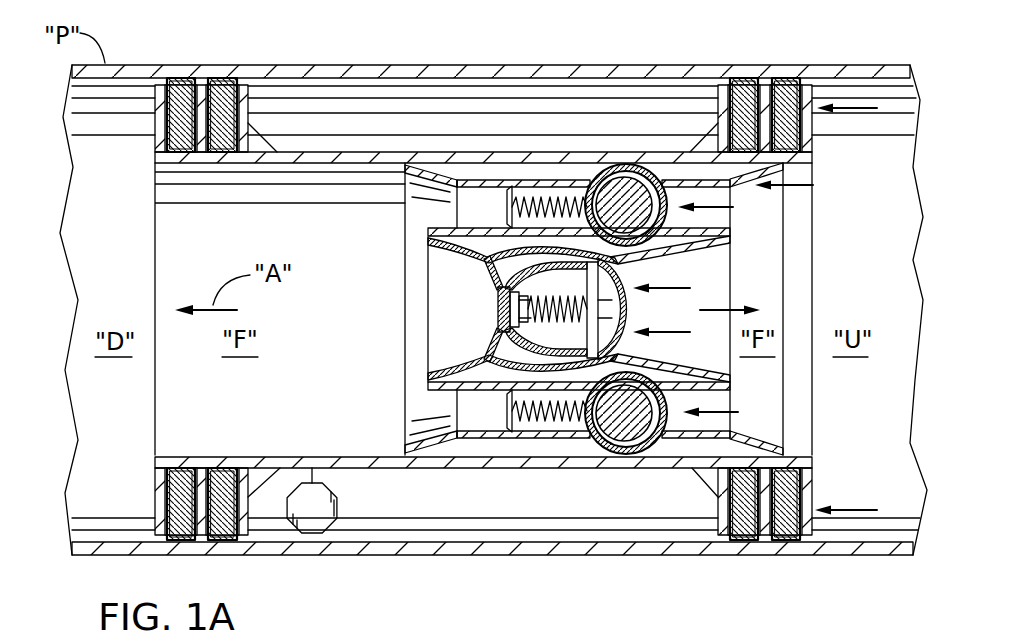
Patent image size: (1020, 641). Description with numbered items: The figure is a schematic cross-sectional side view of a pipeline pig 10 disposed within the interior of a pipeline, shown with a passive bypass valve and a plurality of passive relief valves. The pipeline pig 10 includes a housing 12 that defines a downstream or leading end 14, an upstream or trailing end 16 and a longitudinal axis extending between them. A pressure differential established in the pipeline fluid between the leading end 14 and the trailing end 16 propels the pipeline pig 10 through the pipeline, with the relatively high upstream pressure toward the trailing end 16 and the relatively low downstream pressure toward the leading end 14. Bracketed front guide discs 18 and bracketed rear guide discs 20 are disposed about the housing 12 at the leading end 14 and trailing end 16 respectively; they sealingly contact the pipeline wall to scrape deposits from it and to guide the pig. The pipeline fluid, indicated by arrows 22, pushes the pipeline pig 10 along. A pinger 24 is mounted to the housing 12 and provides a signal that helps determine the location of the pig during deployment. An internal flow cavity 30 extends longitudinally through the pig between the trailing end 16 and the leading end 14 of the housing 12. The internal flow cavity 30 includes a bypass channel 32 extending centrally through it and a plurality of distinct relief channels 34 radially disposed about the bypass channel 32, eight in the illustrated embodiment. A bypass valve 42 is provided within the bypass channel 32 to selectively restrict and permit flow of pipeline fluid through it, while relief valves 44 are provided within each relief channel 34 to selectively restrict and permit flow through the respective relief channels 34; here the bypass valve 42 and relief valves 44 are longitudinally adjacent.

The pipeline pig 10 is at (584, 97).
The housing 12 is at (350, 150).
The leading end 14 is at (155, 216).
The trailing end 16 is at (813, 206).
The bracketed front guide discs 18 is at (200, 57).
The bracketed rear guide discs 20 is at (816, 57).
The arrows 22 is at (770, 435).
The pinger 24 is at (340, 508).
The internal flow cavity 30 is at (800, 248).
The bypass channel 32 is at (716, 287).
The relief channels 34 is at (725, 402).
The bypass valve 42 is at (495, 282).
The relief valves 44 is at (510, 397).